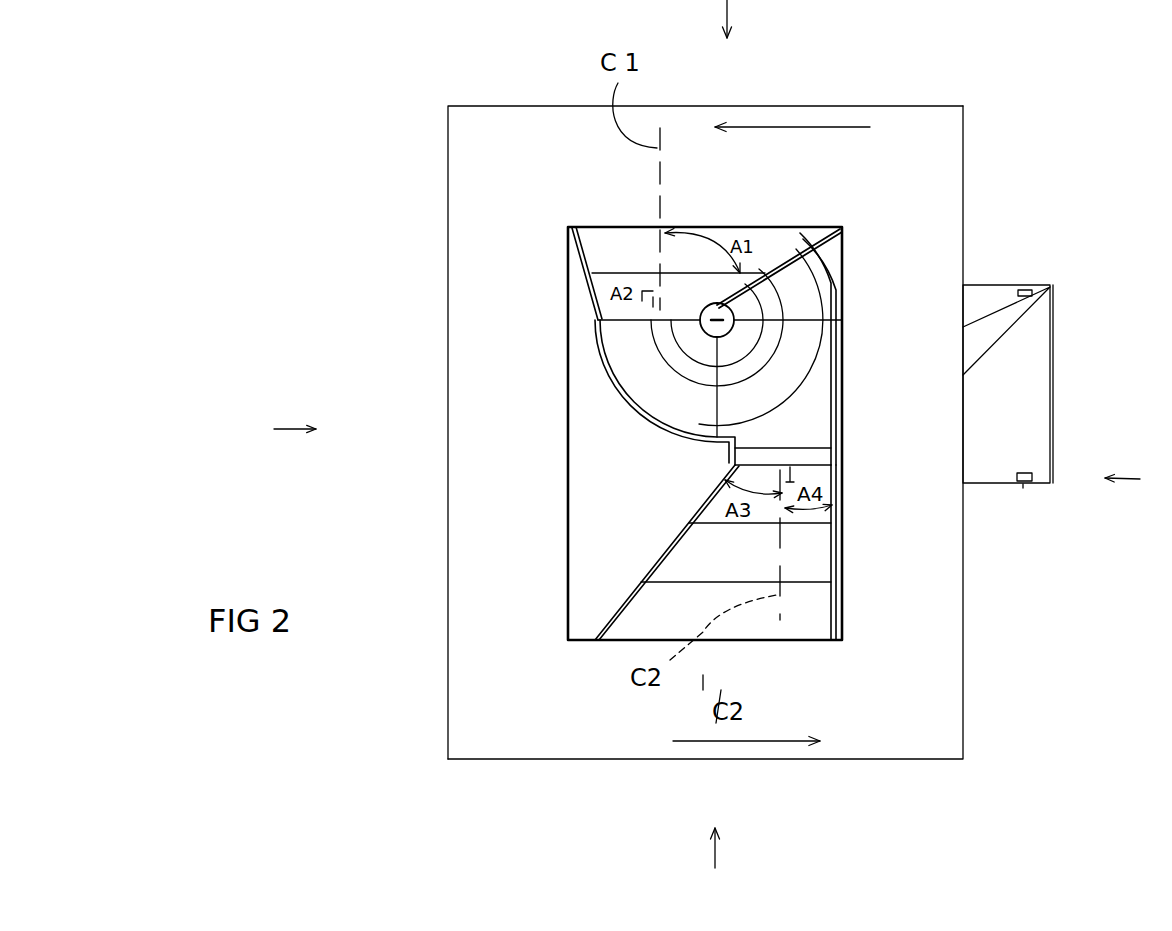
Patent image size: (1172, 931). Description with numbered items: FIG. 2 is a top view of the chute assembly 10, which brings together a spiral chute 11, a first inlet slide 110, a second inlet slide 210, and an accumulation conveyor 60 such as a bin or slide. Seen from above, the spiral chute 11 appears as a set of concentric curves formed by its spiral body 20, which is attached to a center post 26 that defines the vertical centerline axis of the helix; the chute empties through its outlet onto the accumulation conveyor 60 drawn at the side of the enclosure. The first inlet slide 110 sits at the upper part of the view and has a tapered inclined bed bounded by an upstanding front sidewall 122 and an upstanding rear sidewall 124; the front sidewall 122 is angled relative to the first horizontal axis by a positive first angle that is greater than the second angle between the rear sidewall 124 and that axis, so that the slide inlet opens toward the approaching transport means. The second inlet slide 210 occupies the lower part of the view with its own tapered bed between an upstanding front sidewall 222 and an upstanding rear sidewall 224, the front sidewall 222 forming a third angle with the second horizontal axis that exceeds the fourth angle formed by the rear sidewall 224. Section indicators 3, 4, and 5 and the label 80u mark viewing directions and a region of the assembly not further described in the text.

The chute assembly 10 is at (328, 194).
The section line 3 is at (281, 429).
The section line 4 is at (1135, 486).
The section line 5 is at (722, 866).
The first inlet slide 110 is at (618, 250).
The rear sidewall 124 is at (657, 263).
The front sidewall 122 is at (838, 222).
The spiral body 20 is at (803, 293).
The center post 26 is at (707, 327).
The spiral chute 11 is at (658, 433).
The front sidewall 222 is at (640, 579).
The rear sidewall 224 is at (845, 557).
The second inlet slide 210 is at (783, 622).
The accumulation conveyor 60 is at (1037, 338).
The outer housing 80u is at (922, 720).